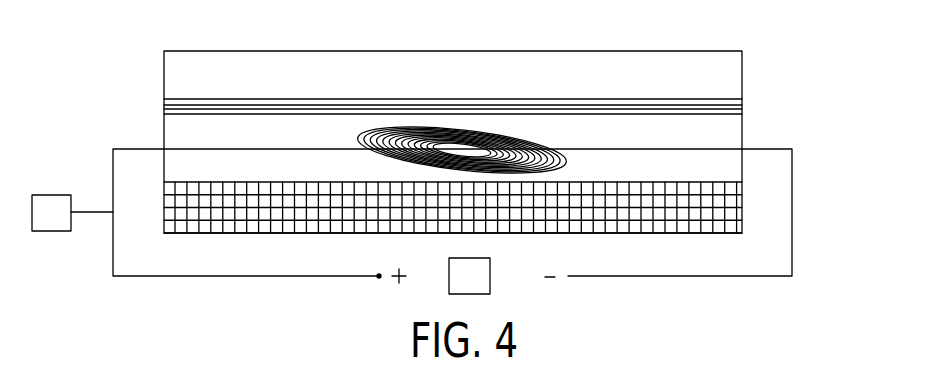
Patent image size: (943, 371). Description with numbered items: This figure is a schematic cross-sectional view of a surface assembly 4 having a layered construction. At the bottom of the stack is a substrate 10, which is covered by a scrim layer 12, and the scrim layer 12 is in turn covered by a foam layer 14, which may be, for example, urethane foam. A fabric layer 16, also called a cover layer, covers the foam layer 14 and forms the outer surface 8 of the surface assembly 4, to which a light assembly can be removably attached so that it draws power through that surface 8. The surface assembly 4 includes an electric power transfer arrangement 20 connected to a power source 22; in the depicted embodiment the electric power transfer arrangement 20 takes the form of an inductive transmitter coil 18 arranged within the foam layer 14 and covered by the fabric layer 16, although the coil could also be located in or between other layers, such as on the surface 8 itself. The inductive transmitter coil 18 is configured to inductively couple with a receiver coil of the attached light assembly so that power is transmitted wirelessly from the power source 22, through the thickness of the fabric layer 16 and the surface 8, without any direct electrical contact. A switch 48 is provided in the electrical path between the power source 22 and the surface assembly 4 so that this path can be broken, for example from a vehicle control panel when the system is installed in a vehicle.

The surface assembly 4 is at (128, 63).
The surface 8 is at (671, 235).
The substrate 10 is at (738, 69).
The scrim layer 12 is at (742, 107).
The foam layer 14 is at (733, 132).
The fabric layer 16 is at (735, 210).
The inductive transmitter coil 18 is at (457, 93).
The electric power transfer arrangement 20 is at (410, 127).
The power source 22 is at (469, 276).
The switch 48 is at (52, 204).